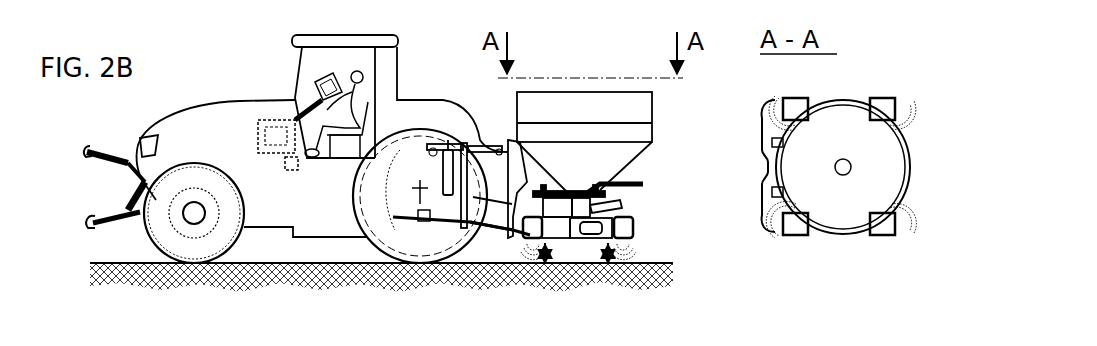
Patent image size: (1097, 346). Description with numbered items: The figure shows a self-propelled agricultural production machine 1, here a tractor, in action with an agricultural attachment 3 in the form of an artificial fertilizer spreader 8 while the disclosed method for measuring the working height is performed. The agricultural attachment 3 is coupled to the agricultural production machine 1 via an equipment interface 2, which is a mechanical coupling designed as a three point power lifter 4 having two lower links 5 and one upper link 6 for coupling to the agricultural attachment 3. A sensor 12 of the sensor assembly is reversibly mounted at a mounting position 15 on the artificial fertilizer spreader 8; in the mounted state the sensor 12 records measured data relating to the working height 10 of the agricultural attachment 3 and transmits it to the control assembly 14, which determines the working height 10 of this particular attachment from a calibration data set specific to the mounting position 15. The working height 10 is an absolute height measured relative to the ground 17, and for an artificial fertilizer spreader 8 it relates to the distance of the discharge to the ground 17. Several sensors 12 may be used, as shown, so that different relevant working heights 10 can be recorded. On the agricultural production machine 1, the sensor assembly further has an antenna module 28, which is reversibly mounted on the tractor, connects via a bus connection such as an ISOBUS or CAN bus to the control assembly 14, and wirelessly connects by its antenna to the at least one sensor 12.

The agricultural production machine 1 is at (222, 100).
The equipment interface 2 is at (460, 146).
The agricultural attachment 3 is at (737, 137).
The three point power lifter 4 is at (488, 126).
The lower link 5 is at (504, 232).
The upper link 6 is at (497, 152).
The artificial fertilizer spreader 8 is at (550, 103).
The working height 10 is at (539, 233).
The sensor 12 is at (607, 238).
The control assembly 14 is at (273, 128).
The mounting position 15 is at (511, 258).
The ground 17 is at (149, 263).
The antenna module 28 is at (285, 167).